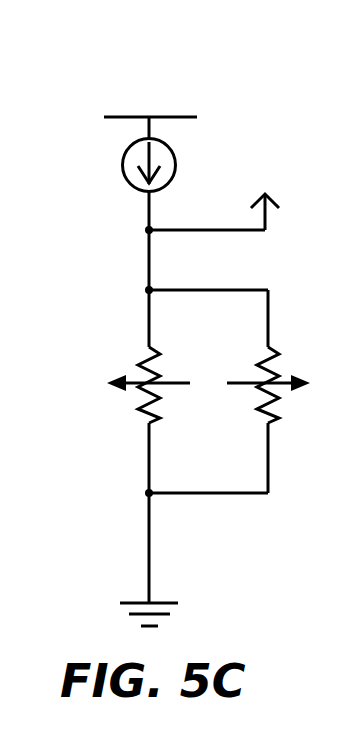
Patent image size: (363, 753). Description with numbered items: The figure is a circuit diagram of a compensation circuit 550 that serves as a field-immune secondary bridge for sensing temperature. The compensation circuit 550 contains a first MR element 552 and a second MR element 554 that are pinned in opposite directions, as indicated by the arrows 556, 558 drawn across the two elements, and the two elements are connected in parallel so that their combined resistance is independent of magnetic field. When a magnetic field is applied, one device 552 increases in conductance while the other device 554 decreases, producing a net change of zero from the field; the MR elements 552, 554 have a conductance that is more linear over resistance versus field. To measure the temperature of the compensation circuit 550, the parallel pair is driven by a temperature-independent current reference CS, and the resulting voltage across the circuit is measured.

The compensation circuit 550 is at (134, 70).
The temperature-independent current reference CS is at (123, 171).
The first MR element 552 is at (141, 363).
The second MR element 554 is at (277, 363).
The arrow 556 is at (135, 388).
The arrow 558 is at (282, 388).